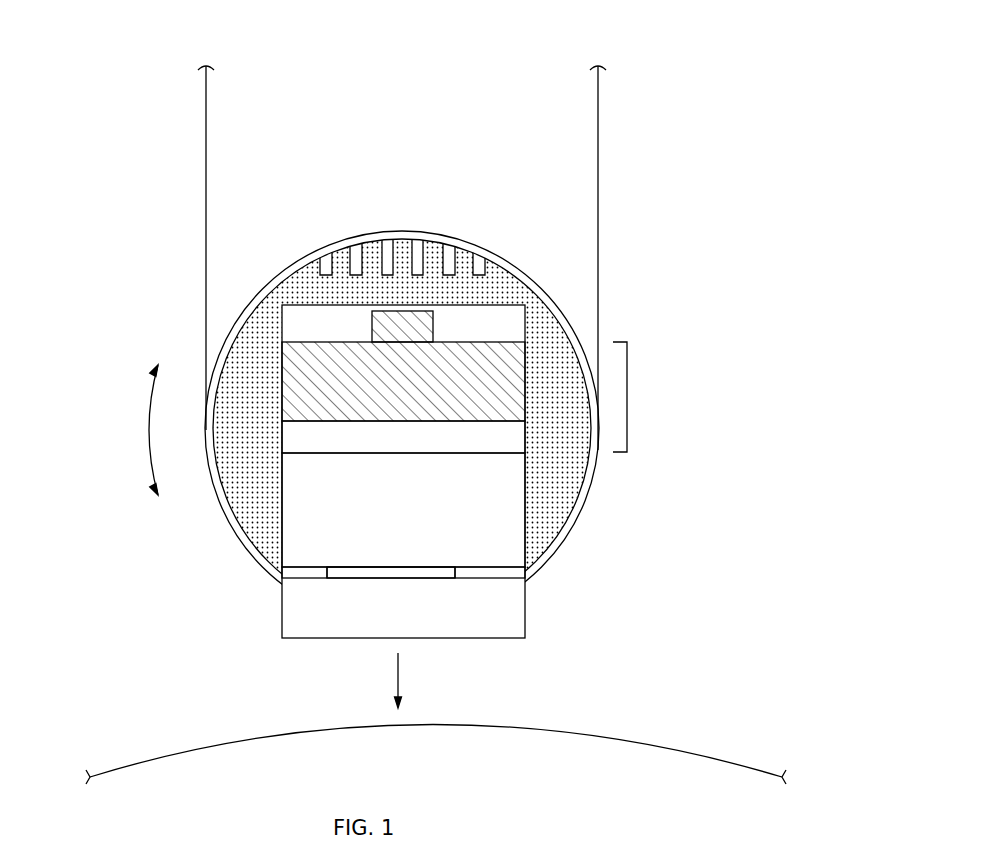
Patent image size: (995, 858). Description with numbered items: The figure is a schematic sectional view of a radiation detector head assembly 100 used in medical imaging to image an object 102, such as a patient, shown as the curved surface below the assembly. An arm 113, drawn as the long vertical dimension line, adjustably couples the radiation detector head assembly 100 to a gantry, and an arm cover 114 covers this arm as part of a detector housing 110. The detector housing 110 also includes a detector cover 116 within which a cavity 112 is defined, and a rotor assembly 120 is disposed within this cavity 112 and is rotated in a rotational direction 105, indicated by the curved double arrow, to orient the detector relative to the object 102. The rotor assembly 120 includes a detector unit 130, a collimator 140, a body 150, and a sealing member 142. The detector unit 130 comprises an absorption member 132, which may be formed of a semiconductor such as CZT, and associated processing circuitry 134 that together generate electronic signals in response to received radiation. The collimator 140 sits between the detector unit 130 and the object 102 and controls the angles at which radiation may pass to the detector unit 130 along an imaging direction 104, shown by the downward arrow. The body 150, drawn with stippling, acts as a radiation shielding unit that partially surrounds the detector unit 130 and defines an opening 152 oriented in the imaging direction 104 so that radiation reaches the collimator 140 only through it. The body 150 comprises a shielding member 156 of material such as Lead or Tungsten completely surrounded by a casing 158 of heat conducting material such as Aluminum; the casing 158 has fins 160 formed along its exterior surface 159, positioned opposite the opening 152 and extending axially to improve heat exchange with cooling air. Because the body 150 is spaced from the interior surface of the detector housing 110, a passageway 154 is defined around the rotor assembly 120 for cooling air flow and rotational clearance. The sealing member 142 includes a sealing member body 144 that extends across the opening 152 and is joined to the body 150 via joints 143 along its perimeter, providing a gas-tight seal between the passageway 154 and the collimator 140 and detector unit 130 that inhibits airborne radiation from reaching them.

The radiation detector head assembly 100 is at (197, 52).
The object 102 is at (608, 735).
The imaging direction 104 is at (400, 680).
The rotational direction 105 is at (145, 428).
The detector housing 110 is at (608, 272).
The cavity 112 is at (431, 607).
The arm 113 is at (598, 98).
The arm cover 114 is at (598, 157).
The detector cover 116 is at (578, 322).
The rotor assembly 120 is at (282, 628).
The detector unit 130 is at (627, 395).
The absorption member 132 is at (403, 437).
The processing circuitry 134 is at (403, 381).
The collimator 140 is at (403, 510).
The sealing member 142 is at (463, 585).
The joints 143 is at (312, 587).
The sealing member body 144 is at (455, 578).
The body 150 is at (572, 440).
The opening 152 is at (362, 594).
The passageway 154 is at (576, 548).
The shielding member 156 is at (571, 536).
The casing 158 is at (589, 497).
The exterior surface 159 is at (505, 258).
The fins 160 is at (413, 222).